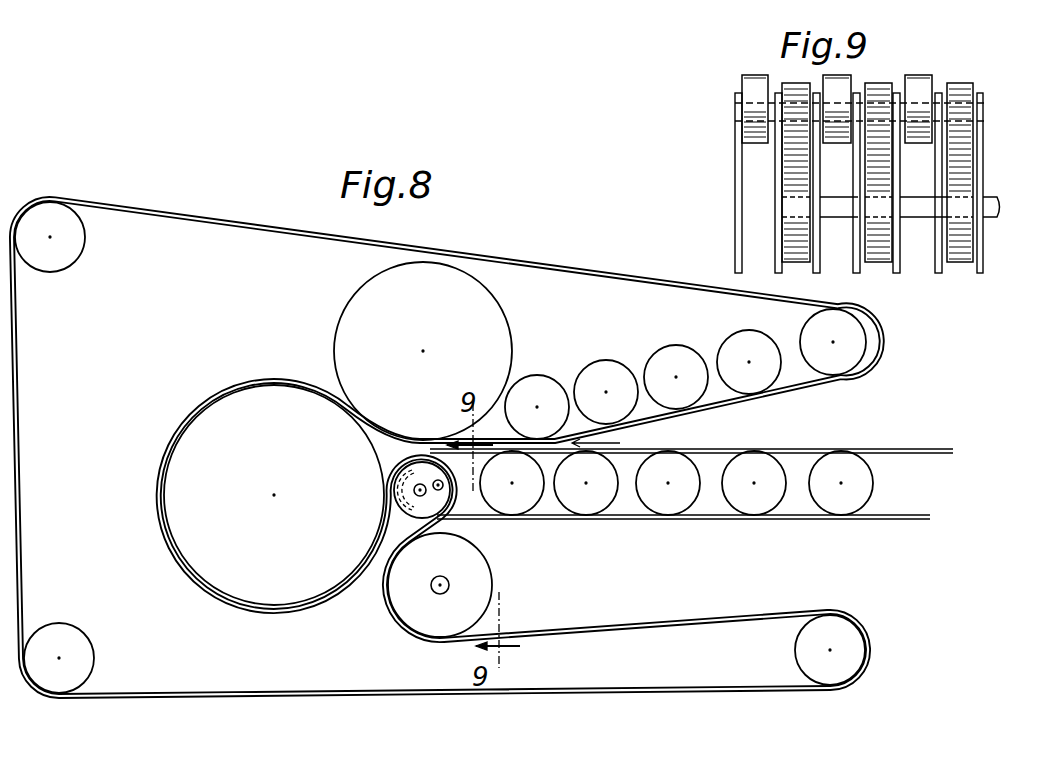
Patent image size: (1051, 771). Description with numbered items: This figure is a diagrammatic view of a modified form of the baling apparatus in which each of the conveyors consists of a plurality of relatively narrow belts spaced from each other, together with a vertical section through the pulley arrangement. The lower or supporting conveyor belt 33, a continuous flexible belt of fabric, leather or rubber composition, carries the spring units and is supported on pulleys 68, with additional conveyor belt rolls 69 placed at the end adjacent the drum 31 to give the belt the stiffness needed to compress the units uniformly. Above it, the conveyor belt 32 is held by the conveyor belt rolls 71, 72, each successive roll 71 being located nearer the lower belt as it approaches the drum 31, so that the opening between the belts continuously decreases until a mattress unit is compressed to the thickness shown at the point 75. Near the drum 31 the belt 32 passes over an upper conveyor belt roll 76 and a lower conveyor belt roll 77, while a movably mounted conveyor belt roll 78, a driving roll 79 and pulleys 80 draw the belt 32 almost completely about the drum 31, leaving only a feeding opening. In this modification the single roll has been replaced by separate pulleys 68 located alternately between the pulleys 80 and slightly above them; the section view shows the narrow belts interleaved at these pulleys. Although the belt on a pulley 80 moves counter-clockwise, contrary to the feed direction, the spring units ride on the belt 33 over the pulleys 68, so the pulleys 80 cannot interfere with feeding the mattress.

In FIG. 8, the drum 31 is at (182, 548).
In FIG. 8, the conveyor belt 32 is at (267, 228).
In FIG. 8, the supporting conveyor belt 33 is at (885, 447).
In FIG. 9, the supporting conveyor belt 33 is at (748, 80).
In FIG. 8, the pulleys 68 is at (458, 498).
In FIG. 9, the pulleys 68 is at (748, 88).
In FIG. 8, the conveyor belt rolls 69 is at (693, 515).
In FIG. 8, the conveyor belt rolls 71 is at (725, 343).
In FIG. 8, the conveyor belt roll 72 is at (460, 272).
In FIG. 8, the point of compressed thickness 75 is at (600, 441).
In FIG. 8, the upper conveyor belt roll 76 is at (53, 213).
In FIG. 8, the lower conveyor belt roll 77 is at (64, 625).
In FIG. 8, the movably mounted conveyor belt roll 78 is at (827, 618).
In FIG. 8, the driving roll 79 is at (400, 605).
In FIG. 9, the driving roll 79 is at (953, 236).
In FIG. 8, the pulleys 80 is at (403, 498).
In FIG. 9, the pulleys 80 is at (787, 155).